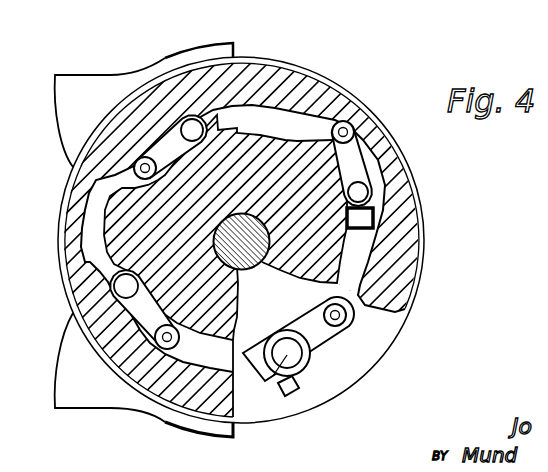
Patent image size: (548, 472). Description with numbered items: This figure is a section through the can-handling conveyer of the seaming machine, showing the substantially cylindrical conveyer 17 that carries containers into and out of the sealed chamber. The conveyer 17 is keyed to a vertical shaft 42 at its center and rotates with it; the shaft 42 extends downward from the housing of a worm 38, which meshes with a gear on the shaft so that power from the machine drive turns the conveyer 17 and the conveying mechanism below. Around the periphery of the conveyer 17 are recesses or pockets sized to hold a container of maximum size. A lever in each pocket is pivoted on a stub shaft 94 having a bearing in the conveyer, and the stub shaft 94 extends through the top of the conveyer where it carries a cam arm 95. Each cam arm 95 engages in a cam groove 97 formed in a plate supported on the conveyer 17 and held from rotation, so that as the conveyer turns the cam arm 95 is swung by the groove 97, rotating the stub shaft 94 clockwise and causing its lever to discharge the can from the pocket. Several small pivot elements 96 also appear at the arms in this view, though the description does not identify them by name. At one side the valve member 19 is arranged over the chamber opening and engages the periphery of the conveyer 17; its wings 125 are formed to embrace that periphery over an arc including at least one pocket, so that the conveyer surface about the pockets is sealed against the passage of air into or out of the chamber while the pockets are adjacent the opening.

The conveyer 17 is at (262, 412).
The valve member 19 is at (78, 92).
The worm 38 is at (399, 268).
The vertical shaft 42 is at (249, 268).
The stub shaft 94 is at (192, 128).
The cam arm 95 is at (358, 157).
The pivot pin 96 is at (348, 133).
The cam groove 97 is at (351, 98).
The wings 125 is at (222, 50).